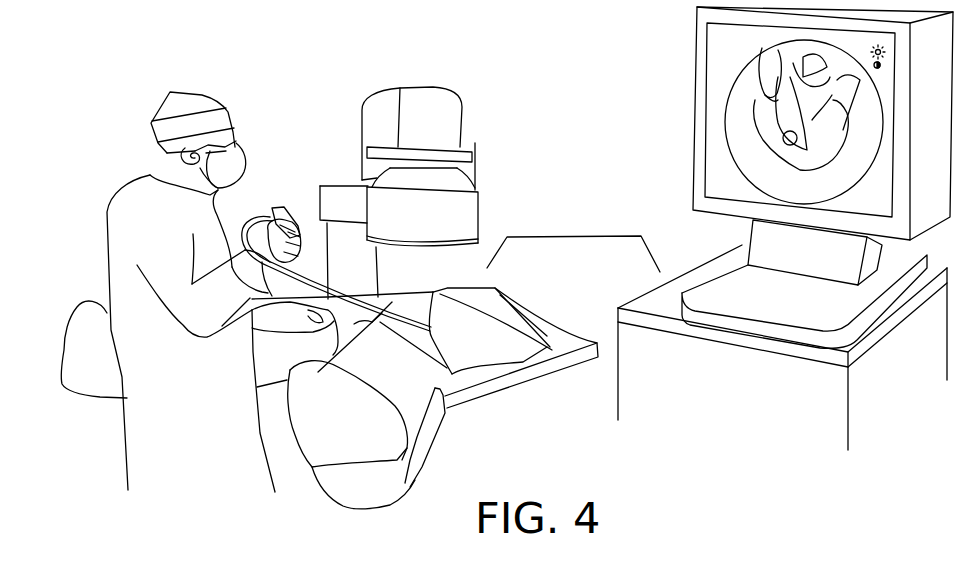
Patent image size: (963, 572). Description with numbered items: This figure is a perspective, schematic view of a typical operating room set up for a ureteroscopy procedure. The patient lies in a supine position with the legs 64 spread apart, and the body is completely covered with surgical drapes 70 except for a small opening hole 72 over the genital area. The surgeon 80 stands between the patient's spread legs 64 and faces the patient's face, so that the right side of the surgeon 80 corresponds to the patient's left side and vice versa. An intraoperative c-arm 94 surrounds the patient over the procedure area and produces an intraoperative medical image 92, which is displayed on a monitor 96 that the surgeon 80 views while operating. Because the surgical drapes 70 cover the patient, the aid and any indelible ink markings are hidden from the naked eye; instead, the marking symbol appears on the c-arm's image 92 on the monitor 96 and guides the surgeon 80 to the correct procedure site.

The surgeon 80 is at (123, 202).
The legs 64 is at (82, 322).
The surgical drapes 70 is at (512, 337).
The opening hole 72 is at (437, 347).
The intraoperative c-arm 94 is at (447, 122).
The monitor 96 is at (700, 43).
The image 92 is at (730, 117).